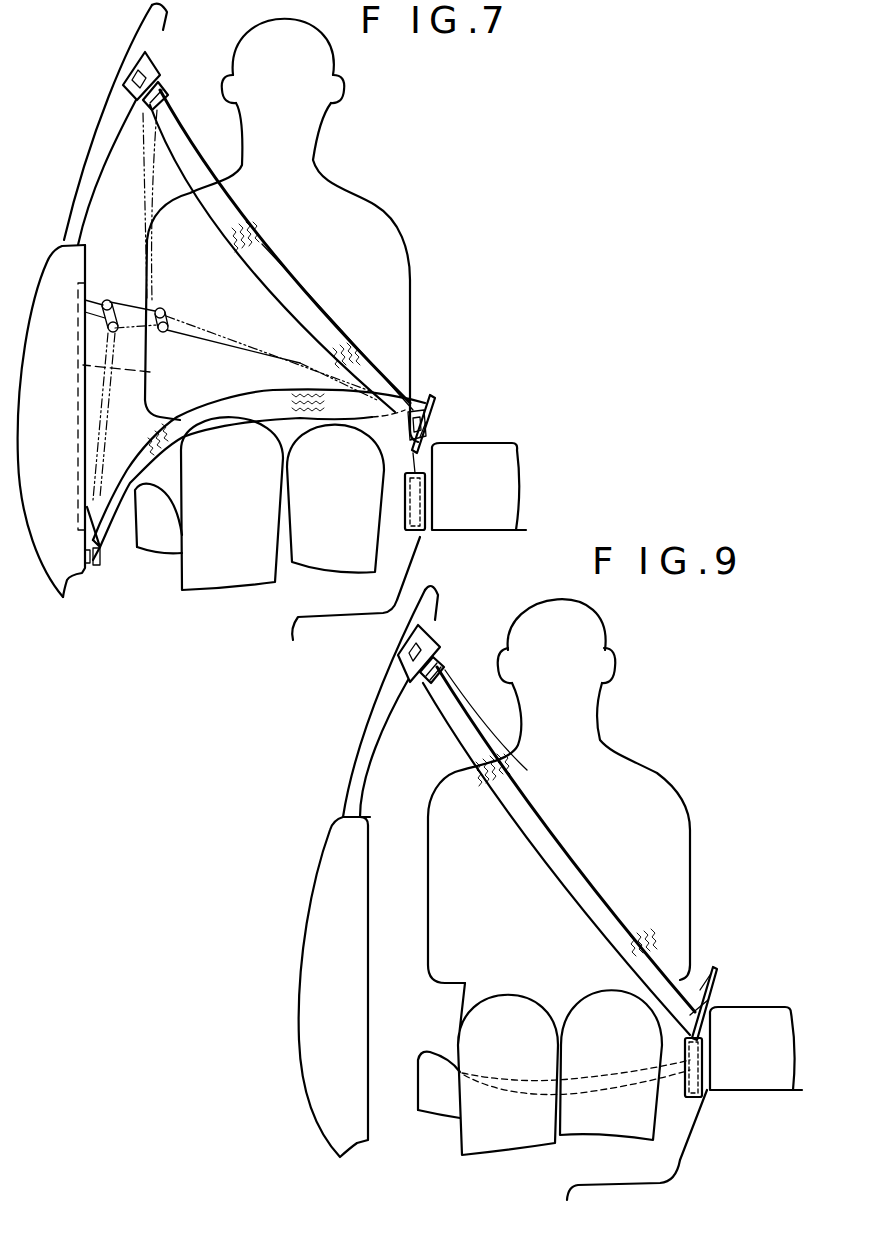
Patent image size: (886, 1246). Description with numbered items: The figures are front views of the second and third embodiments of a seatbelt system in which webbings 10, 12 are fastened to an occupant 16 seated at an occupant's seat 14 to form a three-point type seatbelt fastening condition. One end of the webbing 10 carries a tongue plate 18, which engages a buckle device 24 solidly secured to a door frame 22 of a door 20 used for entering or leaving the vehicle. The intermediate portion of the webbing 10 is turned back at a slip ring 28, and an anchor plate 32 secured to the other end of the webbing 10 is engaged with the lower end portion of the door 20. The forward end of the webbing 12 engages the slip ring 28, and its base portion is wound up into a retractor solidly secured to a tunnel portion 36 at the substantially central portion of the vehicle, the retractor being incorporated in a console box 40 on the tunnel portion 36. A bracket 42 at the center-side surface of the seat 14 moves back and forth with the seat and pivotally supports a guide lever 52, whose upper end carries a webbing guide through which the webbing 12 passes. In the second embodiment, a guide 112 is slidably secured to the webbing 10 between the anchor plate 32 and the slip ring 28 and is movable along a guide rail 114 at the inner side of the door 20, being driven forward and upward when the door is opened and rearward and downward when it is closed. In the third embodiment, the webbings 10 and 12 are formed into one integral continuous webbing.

In FIG. 7, the webbing 10 is at (276, 274).
In FIG. 9, the webbing 10 is at (532, 813).
In FIG. 7, the webbing 12 is at (432, 445).
In FIG. 9, the webbing 12 is at (705, 1010).
In FIG. 7, the occupant's seat 14 is at (167, 543).
In FIG. 9, the occupant's seat 14 is at (437, 1107).
In FIG. 7, the occupant 16 is at (410, 278).
In FIG. 9, the occupant 16 is at (670, 790).
In FIG. 7, the tongue plate 18 is at (160, 94).
In FIG. 9, the tongue plate 18 is at (444, 667).
In FIG. 7, the door 20 is at (82, 262).
In FIG. 9, the door 20 is at (345, 853).
In FIG. 7, the door frame 22 is at (98, 125).
In FIG. 9, the door frame 22 is at (365, 757).
In FIG. 7, the buckle device 24 is at (147, 58).
In FIG. 9, the buckle device 24 is at (432, 637).
In FIG. 7, the slip ring 28 is at (167, 312).
In FIG. 7, the anchor plate 32 is at (91, 567).
In FIG. 7, the tunnel portion 36 is at (472, 530).
In FIG. 9, the tunnel portion 36 is at (748, 1090).
In FIG. 7, the console box 40 is at (495, 445).
In FIG. 9, the console box 40 is at (773, 990).
In FIG. 7, the bracket 42 is at (405, 513).
In FIG. 9, the bracket 42 is at (683, 1083).
In FIG. 7, the guide lever 52 is at (405, 453).
In FIG. 9, the guide lever 52 is at (703, 967).
In FIG. 7, the guide 112 is at (100, 542).
In FIG. 7, the guide rail 114 is at (145, 371).